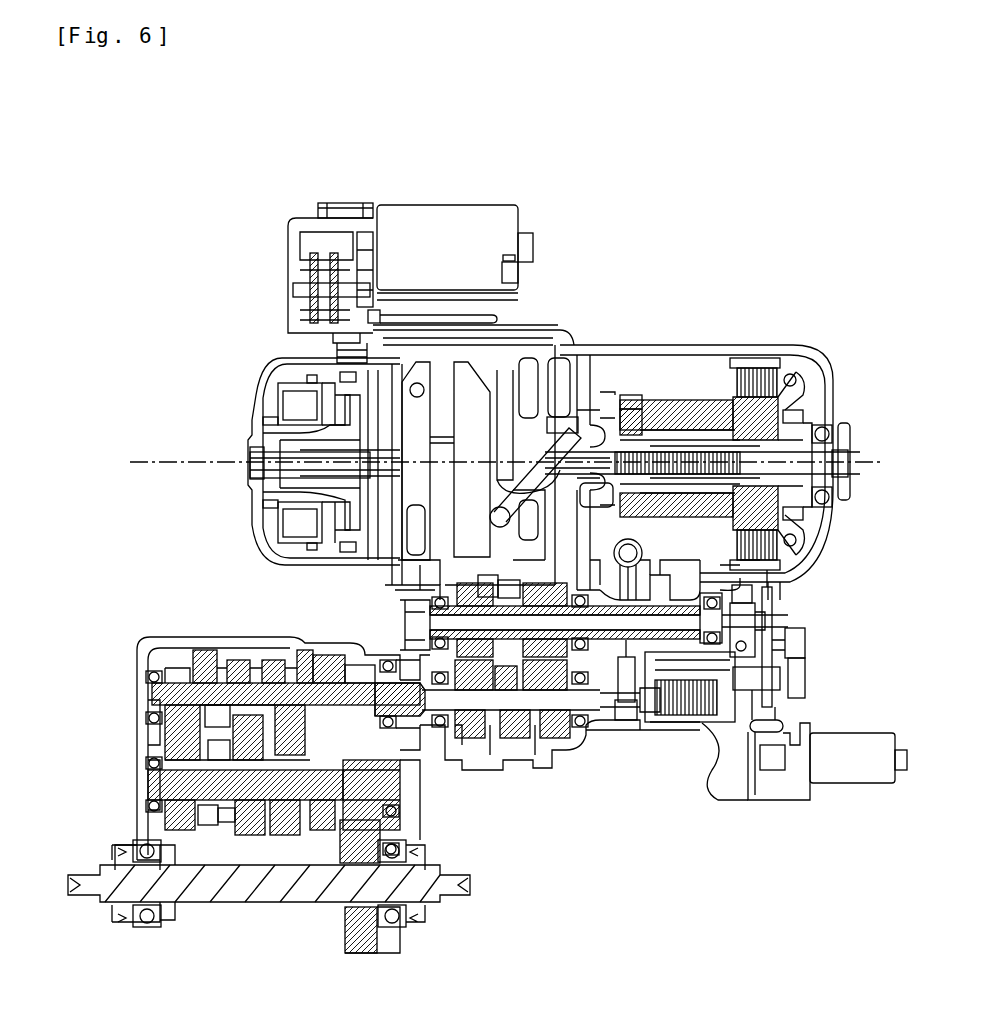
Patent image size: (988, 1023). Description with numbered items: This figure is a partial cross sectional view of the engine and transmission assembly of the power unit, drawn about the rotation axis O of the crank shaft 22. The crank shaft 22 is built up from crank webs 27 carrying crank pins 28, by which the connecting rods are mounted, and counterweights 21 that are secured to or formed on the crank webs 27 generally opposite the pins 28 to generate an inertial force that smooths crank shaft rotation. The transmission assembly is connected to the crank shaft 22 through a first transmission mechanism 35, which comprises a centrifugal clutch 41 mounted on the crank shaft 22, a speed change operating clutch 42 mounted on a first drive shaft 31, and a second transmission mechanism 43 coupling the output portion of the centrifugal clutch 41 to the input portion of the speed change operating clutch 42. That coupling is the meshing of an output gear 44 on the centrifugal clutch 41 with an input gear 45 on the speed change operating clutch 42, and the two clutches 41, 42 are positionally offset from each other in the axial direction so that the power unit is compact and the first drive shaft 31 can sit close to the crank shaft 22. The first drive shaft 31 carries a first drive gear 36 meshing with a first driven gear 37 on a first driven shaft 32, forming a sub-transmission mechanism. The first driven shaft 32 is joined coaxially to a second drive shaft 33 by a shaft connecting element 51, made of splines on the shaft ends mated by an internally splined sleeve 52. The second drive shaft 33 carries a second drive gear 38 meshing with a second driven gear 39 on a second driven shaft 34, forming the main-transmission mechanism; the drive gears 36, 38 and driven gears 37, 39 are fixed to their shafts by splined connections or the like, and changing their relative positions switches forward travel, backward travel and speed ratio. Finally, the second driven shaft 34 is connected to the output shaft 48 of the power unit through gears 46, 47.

The counterweight 21 is at (548, 318).
The crank shaft 22 is at (580, 372).
The crank web 27 is at (283, 346).
The crank pin 28 is at (437, 378).
The first drive shaft 31 is at (486, 590).
The first driven shaft 32 is at (541, 736).
The second drive shaft 33 is at (200, 668).
The second driven shaft 34 is at (150, 790).
The first transmission mechanism 35 is at (704, 375).
The first drive gear 36 is at (527, 592).
The first driven gear 37 is at (488, 770).
The second drive gear 38 is at (243, 655).
The second driven gear 39 is at (240, 830).
The centrifugal clutch 41 is at (772, 355).
The speed change operating clutch 42 is at (677, 716).
The second transmission mechanism 43 is at (617, 545).
The output gear 44 is at (633, 395).
The input gear 45 is at (626, 720).
The gear 46 is at (408, 810).
The gear 47 is at (345, 932).
The output shaft 48 is at (272, 900).
The shaft connecting element 51 is at (360, 666).
The sleeve 52 is at (412, 732).
The crankshaft axis O is at (876, 462).